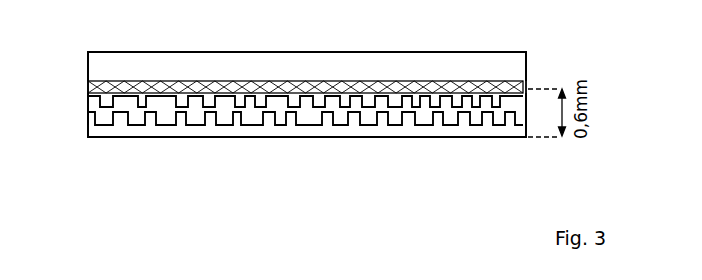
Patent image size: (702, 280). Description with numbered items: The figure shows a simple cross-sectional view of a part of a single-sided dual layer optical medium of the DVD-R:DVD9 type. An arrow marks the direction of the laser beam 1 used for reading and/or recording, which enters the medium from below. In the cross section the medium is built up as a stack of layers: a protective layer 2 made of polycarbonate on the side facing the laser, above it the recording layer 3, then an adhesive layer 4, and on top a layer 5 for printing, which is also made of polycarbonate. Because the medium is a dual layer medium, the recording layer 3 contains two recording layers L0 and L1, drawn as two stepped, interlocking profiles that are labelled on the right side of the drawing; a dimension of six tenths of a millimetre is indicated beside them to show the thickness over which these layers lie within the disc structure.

The direction of the laser beam 1 is at (73, 126).
The protective layer 2 is at (307, 115).
The recording layer 3 is at (77, 110).
The adhesive layer 4 is at (78, 82).
The layer for printing 5 is at (307, 66).
The recording layer L1 is at (531, 82).
The recording layer L0 is at (525, 127).